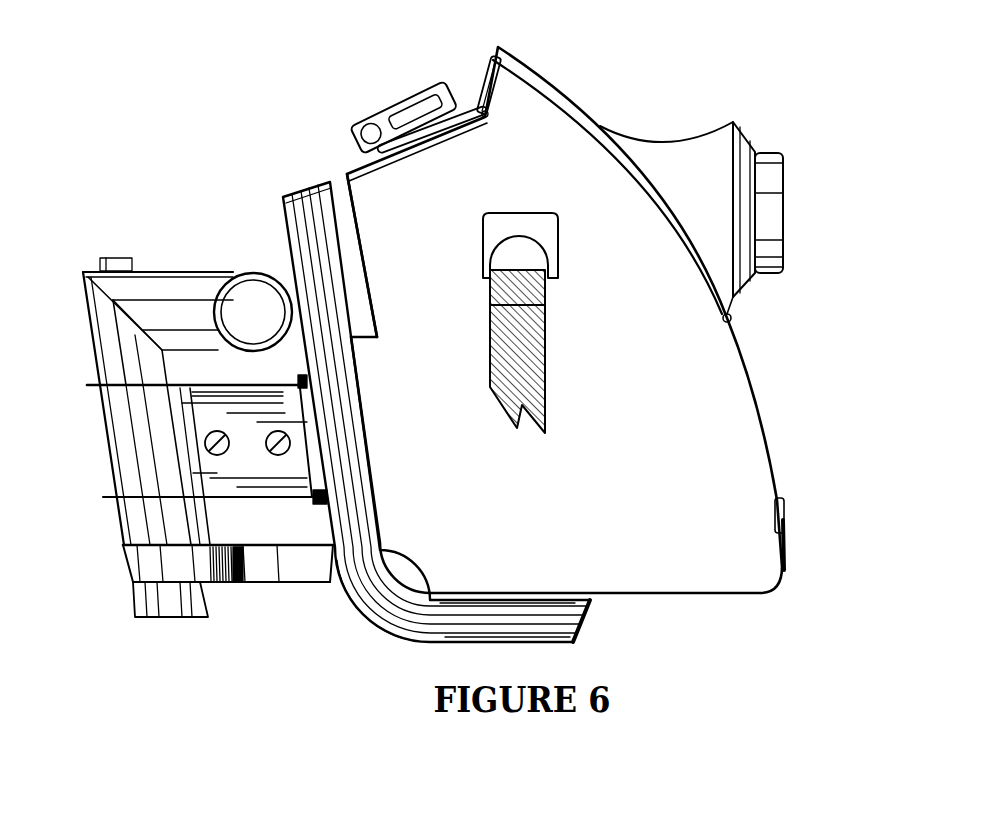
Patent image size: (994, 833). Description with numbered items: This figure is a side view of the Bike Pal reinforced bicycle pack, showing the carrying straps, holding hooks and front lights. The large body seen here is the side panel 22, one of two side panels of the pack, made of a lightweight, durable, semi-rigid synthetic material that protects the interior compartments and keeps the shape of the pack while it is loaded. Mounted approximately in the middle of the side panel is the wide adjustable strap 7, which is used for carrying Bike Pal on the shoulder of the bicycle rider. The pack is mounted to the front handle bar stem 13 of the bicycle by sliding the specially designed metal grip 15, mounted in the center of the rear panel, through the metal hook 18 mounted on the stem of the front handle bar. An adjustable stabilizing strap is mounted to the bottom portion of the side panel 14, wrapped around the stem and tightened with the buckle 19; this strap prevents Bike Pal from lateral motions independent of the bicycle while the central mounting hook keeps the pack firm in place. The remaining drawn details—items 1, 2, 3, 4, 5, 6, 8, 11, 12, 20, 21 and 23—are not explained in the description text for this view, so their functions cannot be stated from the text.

The connector 1 is at (766, 152).
The curved top band 2 is at (577, 110).
The hinge member 3 is at (490, 63).
The display panel 4 is at (370, 123).
The bracket 5 is at (552, 210).
The rail 6 is at (413, 135).
The wide adjustable strap 7 is at (513, 387).
The side panel 8 is at (360, 285).
The bottom panel 11 is at (590, 607).
The tab 12 is at (787, 530).
The front handle bar stem 13 is at (127, 362).
The bottom portion of side panel 14 is at (273, 567).
The metal grip 15 is at (303, 387).
The metal hook 18 is at (292, 483).
The buckle 19 is at (232, 582).
The clamp 20 is at (150, 447).
The ring 21 is at (228, 273).
The side panel 22 is at (237, 450).
The corner 23 is at (333, 580).